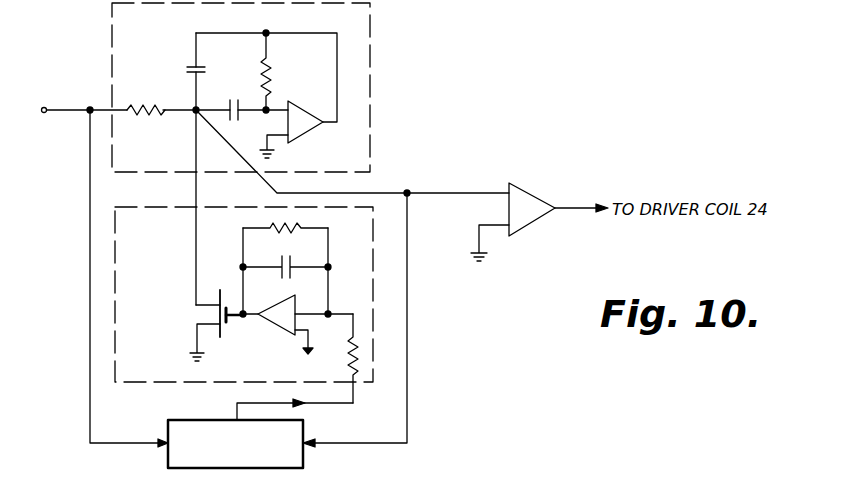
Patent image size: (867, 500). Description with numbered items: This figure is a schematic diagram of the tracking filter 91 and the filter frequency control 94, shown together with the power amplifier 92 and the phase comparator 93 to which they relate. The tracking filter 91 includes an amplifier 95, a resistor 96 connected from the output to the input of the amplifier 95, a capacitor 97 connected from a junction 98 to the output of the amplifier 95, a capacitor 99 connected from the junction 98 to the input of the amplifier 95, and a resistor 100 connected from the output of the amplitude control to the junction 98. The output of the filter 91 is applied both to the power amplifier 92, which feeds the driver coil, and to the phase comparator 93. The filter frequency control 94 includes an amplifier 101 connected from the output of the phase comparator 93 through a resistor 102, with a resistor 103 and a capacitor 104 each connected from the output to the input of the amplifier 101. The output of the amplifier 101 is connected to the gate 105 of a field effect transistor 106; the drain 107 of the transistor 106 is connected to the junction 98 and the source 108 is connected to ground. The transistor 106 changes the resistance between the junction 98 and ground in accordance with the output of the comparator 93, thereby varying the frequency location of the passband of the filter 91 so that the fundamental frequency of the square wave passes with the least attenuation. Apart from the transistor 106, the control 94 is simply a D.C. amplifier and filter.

The tracking filter 91 is at (370, 107).
The power amplifier 92 is at (519, 191).
The phase comparator 93 is at (290, 469).
The filter frequency control 94 is at (365, 383).
The amplifier 95 is at (325, 90).
The resistor 96 is at (265, 64).
The capacitor 97 is at (194, 64).
The junction 98 is at (196, 110).
The capacitor 99 is at (234, 119).
The resistor 100 is at (147, 117).
The amplifier 101 is at (270, 325).
The resistor 102 is at (354, 356).
The resistor 103 is at (303, 218).
The capacitor 104 is at (288, 279).
The gate 105 is at (227, 323).
The field effect transistor 106 is at (203, 312).
The drain 107 is at (196, 305).
The source 108 is at (197, 323).